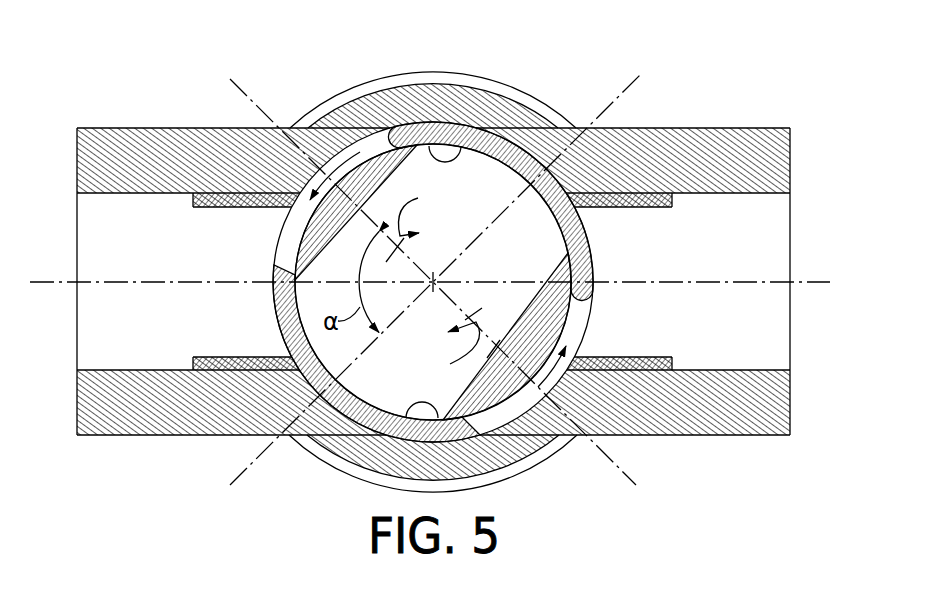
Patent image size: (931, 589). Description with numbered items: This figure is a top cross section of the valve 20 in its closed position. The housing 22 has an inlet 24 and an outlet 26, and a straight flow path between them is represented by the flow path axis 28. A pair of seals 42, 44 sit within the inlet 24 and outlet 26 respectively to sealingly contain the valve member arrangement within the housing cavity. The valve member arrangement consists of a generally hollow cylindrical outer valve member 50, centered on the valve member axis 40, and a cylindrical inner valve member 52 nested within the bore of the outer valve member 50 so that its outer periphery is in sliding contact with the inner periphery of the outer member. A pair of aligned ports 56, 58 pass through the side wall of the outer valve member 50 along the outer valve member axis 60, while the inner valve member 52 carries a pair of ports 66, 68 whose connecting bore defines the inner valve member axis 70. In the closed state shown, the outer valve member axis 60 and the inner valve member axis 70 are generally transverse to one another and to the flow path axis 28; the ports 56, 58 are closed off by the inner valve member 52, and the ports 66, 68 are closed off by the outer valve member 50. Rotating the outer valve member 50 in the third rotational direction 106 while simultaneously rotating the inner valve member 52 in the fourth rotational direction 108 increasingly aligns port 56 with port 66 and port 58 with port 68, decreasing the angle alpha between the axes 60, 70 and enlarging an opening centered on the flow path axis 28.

The valve 20 is at (703, 42).
The housing 22 is at (465, 294).
The inlet 24 is at (790, 147).
The outlet 26 is at (77, 150).
The flow path axis 28 is at (814, 283).
The valve member axis 40 is at (433, 267).
The seal 42 is at (650, 195).
The seal 44 is at (222, 193).
The outer valve member 50 is at (517, 130).
The inner valve member 52 is at (300, 250).
The port 56 is at (375, 125).
The port 58 is at (583, 296).
The outer valve member axis 60 is at (252, 98).
The port 66 is at (408, 410).
The port 68 is at (462, 146).
The inner valve member axis 70 is at (247, 468).
The third rotational direction 106 is at (320, 140).
The fourth rotational direction 108 is at (438, 286).